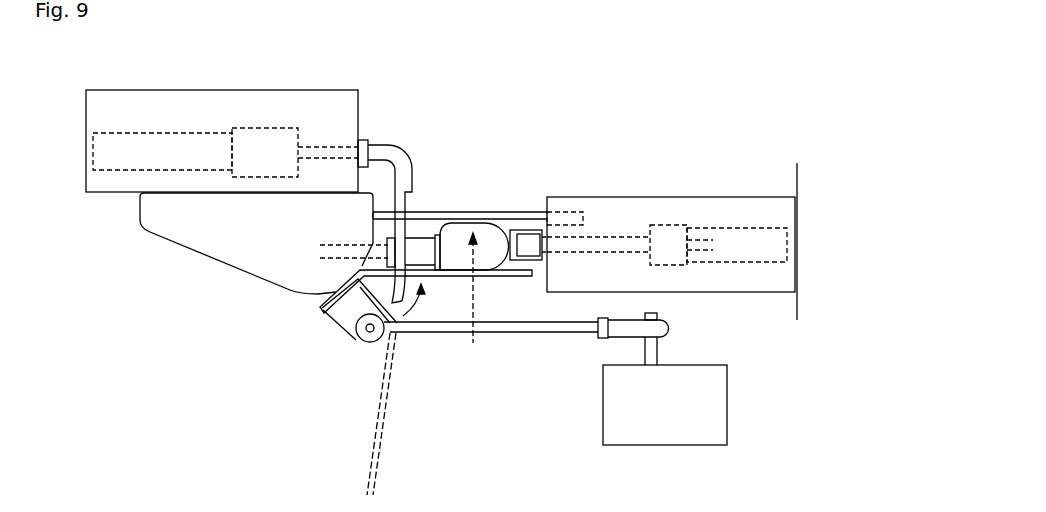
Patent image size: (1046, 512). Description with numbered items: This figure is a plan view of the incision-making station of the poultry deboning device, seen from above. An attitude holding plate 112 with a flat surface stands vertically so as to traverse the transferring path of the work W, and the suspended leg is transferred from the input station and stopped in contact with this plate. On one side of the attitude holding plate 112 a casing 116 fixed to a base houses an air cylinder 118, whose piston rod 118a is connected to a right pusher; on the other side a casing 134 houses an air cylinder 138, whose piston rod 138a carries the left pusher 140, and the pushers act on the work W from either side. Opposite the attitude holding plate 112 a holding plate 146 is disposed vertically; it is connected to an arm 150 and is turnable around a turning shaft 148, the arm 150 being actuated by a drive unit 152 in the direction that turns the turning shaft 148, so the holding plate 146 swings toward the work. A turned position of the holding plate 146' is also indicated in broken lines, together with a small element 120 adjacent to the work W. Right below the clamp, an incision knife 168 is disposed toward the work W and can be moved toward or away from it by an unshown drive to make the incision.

The casing 134 is at (181, 90).
The air cylinder 138 is at (195, 133).
The piston rod 138a is at (325, 147).
The left pusher 140 is at (408, 202).
The attitude holding plate 112 is at (463, 212).
The holder 120 is at (525, 240).
The casing 116 is at (638, 197).
The piston rod 118a is at (590, 237).
The air cylinder 118 is at (712, 228).
The holding plate 146 is at (446, 277).
The lower guide rail 146' is at (418, 415).
The turning shaft 148 is at (362, 332).
The arm 150 is at (563, 333).
The drive unit 152 is at (692, 365).
The incision knife 168 is at (472, 343).
The work W is at (458, 256).